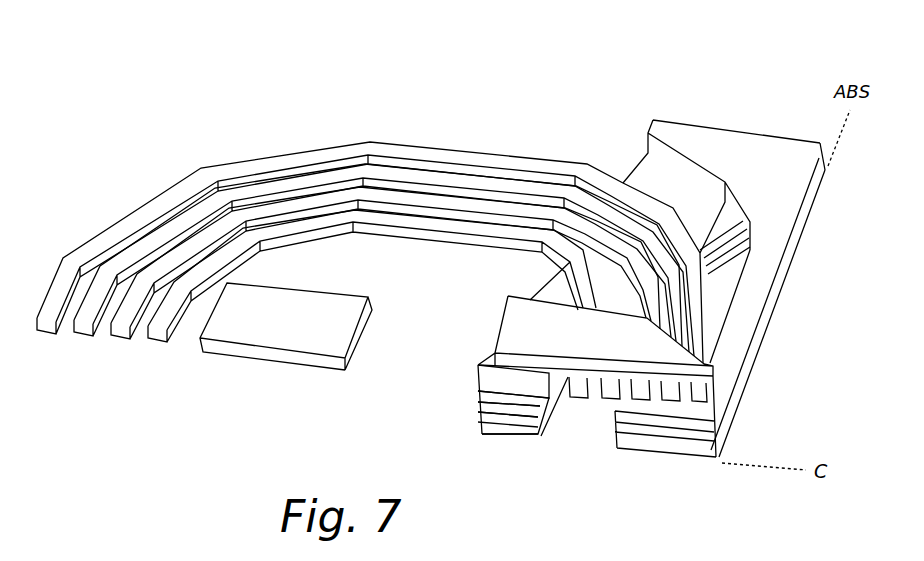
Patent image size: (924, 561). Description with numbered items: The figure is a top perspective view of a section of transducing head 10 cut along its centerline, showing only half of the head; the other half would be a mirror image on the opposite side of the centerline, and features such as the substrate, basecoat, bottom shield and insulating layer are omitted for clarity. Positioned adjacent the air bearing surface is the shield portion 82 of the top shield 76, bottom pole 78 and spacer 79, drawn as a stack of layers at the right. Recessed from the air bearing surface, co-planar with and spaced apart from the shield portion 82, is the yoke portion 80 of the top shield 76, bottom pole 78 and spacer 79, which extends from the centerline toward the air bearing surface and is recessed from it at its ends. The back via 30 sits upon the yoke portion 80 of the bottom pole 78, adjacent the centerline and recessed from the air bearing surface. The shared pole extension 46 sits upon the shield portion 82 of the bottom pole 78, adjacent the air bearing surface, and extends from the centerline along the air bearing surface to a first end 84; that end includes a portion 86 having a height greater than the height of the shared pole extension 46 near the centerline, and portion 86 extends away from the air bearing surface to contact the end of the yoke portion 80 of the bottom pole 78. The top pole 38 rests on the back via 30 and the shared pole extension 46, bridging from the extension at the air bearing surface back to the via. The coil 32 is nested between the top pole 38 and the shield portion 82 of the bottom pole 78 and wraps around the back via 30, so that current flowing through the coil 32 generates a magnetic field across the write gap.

The transducing head 10 is at (618, 98).
The coil 32 is at (517, 235).
The portion 86 is at (718, 142).
The first end 84 is at (800, 150).
The shared pole extension 46 is at (750, 285).
The top pole 38 is at (527, 327).
The back via 30 is at (488, 380).
The yoke portion 80 is at (477, 430).
The top shield 76 is at (483, 428).
The spacer 79 is at (507, 412).
The bottom pole 78 is at (517, 402).
The shield portion 82 is at (612, 410).